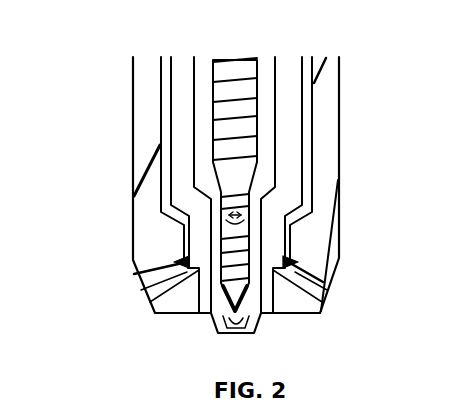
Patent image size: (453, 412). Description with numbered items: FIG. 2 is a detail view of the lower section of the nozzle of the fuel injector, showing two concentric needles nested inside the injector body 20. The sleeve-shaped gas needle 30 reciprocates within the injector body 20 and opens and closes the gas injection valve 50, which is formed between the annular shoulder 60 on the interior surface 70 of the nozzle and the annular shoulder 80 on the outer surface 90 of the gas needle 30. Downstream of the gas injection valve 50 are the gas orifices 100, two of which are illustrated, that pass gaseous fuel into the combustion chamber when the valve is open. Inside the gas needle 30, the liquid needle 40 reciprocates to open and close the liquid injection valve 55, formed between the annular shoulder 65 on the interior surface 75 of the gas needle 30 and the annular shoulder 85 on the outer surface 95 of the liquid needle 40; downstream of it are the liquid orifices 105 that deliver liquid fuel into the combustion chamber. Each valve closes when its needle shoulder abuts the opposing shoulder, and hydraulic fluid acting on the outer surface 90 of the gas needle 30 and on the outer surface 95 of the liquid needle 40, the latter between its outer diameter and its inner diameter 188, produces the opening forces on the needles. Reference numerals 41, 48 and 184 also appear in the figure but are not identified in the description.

The injector body 20 is at (318, 172).
The gas needle 30 is at (289, 128).
The liquid needle 40 is at (244, 90).
The needle lift indicator 41 is at (252, 238).
The drain passage 48 is at (318, 215).
The gas injection valve 50 is at (165, 223).
The liquid injection valve 55 is at (256, 299).
The annular shoulder 60 is at (165, 240).
The annular shoulder 65 is at (280, 300).
The interior surface 70 is at (169, 120).
The interior surface 75 is at (281, 75).
The annular shoulder 80 is at (176, 212).
The annular shoulder 85 is at (318, 314).
The outer surface 90 is at (160, 77).
The outer surface 95 is at (211, 72).
The gas orifices 100 is at (137, 273).
The liquid orifices 105 is at (230, 330).
The fuel injector 184 is at (452, 389).
The inner diameter 188 is at (150, 302).